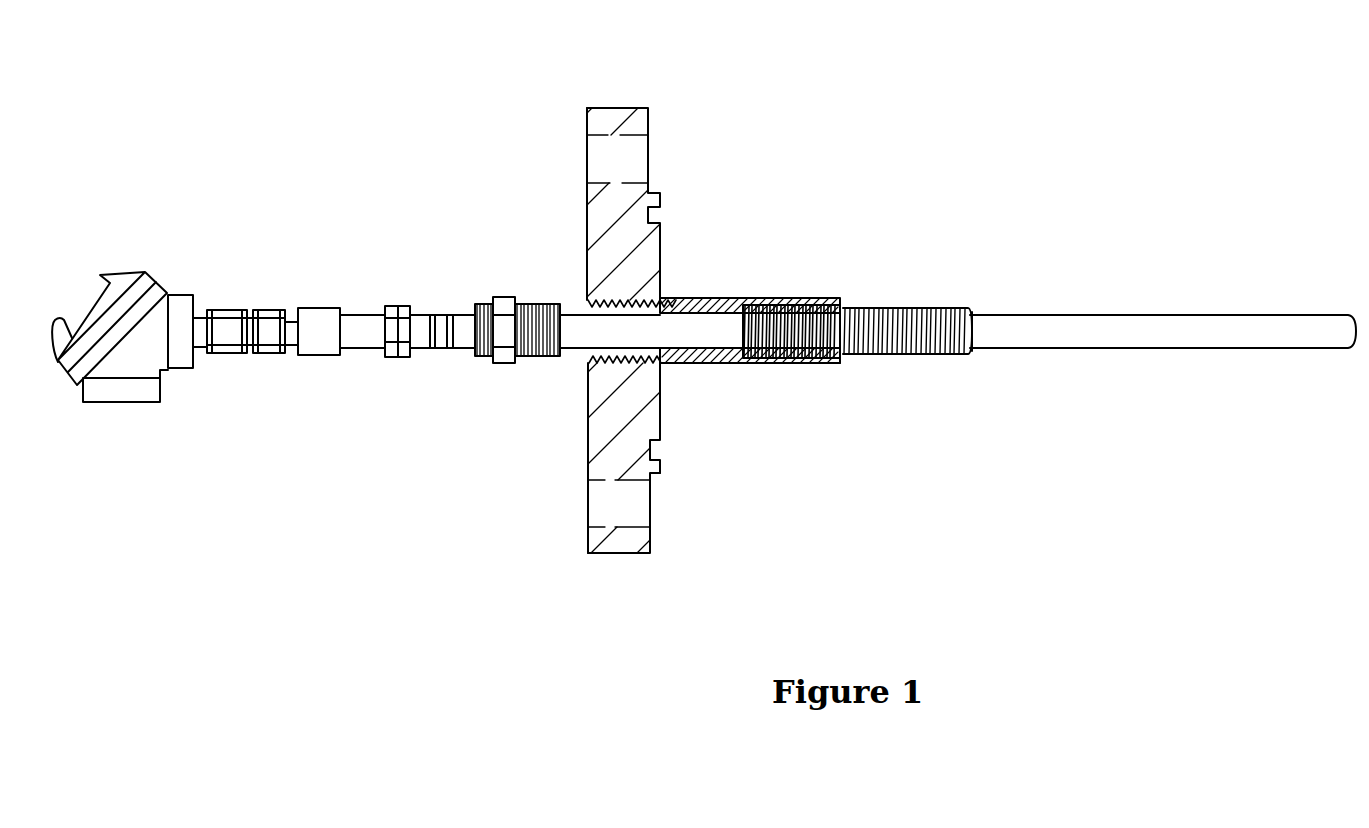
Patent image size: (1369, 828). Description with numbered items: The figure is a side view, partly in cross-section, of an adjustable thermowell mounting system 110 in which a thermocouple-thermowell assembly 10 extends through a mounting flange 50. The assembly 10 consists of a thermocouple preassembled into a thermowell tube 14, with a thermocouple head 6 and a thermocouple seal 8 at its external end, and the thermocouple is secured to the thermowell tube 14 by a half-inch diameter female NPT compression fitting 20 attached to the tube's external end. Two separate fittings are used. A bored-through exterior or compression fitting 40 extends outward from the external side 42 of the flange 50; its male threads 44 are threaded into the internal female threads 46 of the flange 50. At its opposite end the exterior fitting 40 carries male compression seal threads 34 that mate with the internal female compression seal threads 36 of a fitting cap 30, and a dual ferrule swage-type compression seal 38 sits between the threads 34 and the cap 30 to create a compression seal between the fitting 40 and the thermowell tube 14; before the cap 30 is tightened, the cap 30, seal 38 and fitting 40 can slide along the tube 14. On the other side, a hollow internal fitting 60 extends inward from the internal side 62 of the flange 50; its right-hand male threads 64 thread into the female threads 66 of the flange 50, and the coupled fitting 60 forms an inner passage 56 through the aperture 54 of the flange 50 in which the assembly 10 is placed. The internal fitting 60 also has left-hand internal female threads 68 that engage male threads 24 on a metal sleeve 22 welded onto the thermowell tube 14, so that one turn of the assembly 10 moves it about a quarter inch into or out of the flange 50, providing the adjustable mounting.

The thermocouple head 6 is at (115, 270).
The thermocouple seal 8 is at (222, 310).
The thermocouple-thermowell assembly 10 is at (342, 178).
The adjustable thermowell mounting system 110 is at (746, 210).
The thermowell tube 14 is at (360, 349).
The female NPT compression fitting 20 is at (307, 357).
The metal sleeve 22 is at (970, 312).
The male threads 24 is at (917, 356).
The fitting cap 30 is at (397, 358).
The male compression seal threads 34 is at (475, 305).
The internal female compression seal threads 36 is at (412, 318).
The dual ferrule swage-type compression seal 38 is at (452, 381).
The exterior fitting 40 is at (508, 364).
The external side 42 is at (588, 458).
The male threads 44 is at (547, 362).
The internal female threads 46 is at (583, 306).
The mounting flange 50 is at (606, 555).
The aperture 54 is at (582, 364).
The inner passage 56 is at (713, 299).
The hollow internal fitting 60 is at (708, 367).
The internal side 62 is at (660, 427).
The male threads 64 is at (667, 367).
The female threads 66 is at (633, 305).
The internal female threads 68 is at (807, 304).